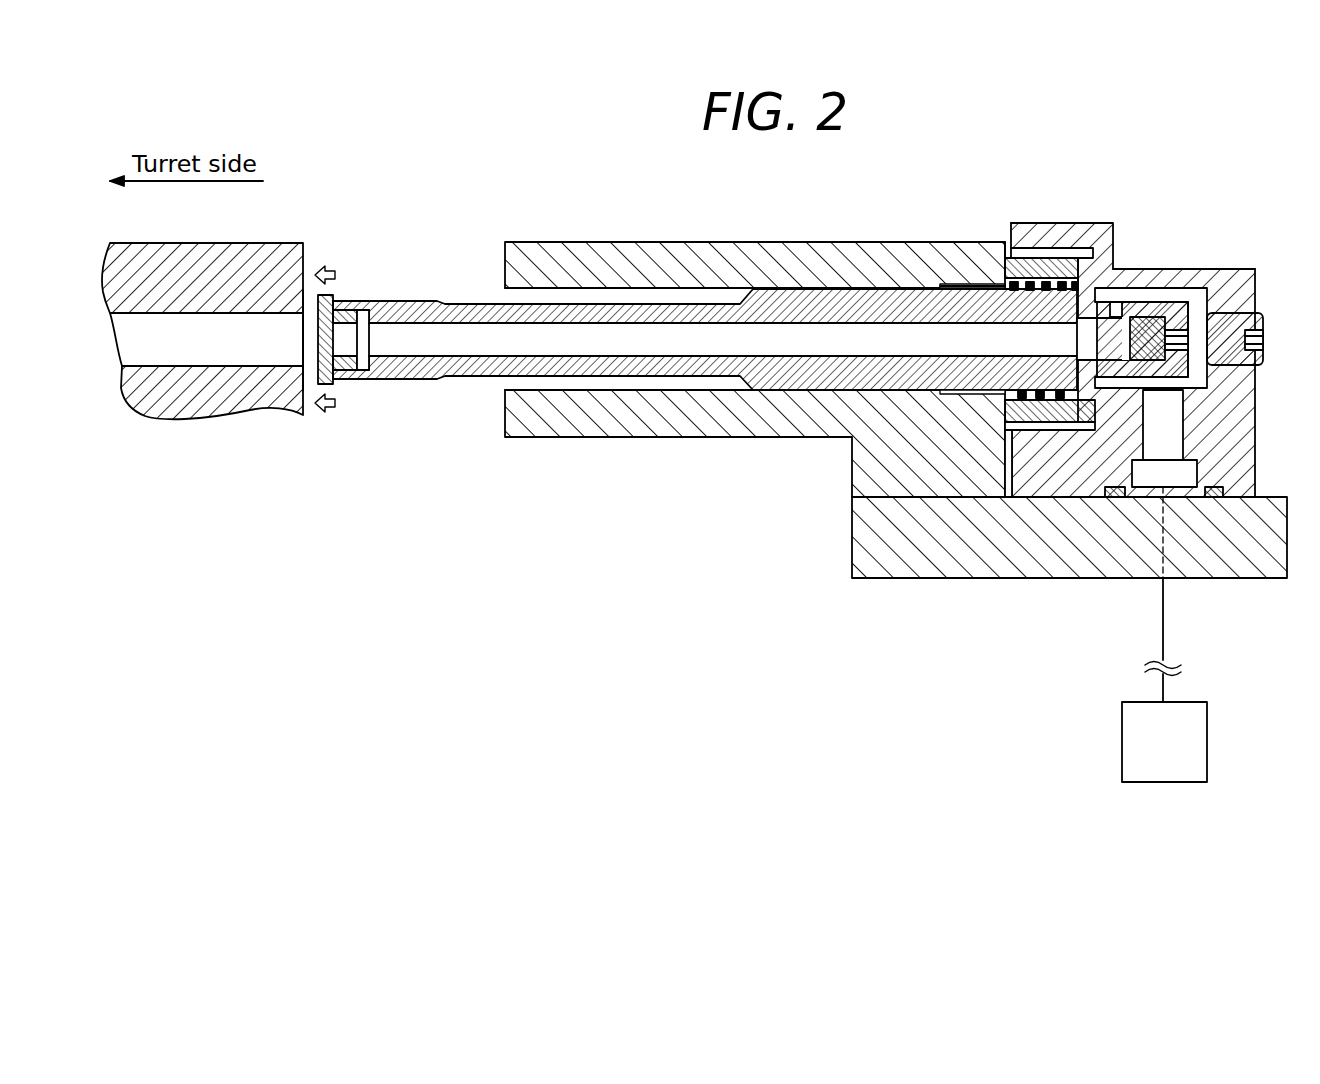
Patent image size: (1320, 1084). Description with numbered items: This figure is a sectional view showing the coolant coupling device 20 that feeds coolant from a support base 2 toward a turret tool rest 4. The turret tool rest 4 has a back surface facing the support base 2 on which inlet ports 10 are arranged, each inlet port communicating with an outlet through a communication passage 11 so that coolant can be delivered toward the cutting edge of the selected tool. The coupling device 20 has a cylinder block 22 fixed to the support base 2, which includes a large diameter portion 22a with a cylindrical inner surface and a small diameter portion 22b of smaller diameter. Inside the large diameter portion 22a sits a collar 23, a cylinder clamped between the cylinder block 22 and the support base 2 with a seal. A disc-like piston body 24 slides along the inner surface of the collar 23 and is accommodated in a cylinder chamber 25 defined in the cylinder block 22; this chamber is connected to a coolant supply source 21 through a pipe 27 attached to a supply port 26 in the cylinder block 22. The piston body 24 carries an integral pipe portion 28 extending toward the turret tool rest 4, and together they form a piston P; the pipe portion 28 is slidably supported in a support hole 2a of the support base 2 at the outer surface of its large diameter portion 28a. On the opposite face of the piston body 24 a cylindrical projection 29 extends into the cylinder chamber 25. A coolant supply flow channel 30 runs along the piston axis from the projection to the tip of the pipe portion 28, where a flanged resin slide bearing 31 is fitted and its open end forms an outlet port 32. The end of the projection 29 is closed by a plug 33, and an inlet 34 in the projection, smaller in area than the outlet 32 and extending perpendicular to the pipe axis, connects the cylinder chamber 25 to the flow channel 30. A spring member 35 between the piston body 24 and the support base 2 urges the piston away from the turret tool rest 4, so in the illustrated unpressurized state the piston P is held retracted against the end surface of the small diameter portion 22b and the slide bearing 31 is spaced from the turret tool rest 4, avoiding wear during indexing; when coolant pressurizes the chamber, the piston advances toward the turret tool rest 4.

The support base 2 is at (905, 565).
The support hole 2a is at (667, 290).
The turret tool rest 4 is at (262, 258).
The inlet ports 10 is at (292, 352).
The communication passage 11 is at (188, 350).
The coolant coupling device 20 is at (1130, 194).
The coolant supply source 21 is at (1195, 741).
The cylinder block 22 is at (1143, 270).
The large diameter portion 22a is at (1073, 228).
The small diameter portion 22b is at (1170, 272).
The collar 23 is at (1042, 270).
The piston body 24 is at (1083, 290).
The cylinder chamber 25 is at (1197, 302).
The supply port 26 is at (1177, 473).
The pipe 27 is at (1165, 622).
The pipe portion 28 is at (655, 375).
The large diameter portion 28a is at (790, 383).
The cylindrical projection 29 is at (1121, 386).
The coolant supply flow channel 30 is at (905, 340).
The slide bearing 31 is at (330, 297).
The outlet port 32 is at (320, 337).
The plug 33 is at (1153, 342).
The inlet 34 is at (1118, 292).
The spring member 35 is at (1040, 415).
The piston P is at (972, 290).